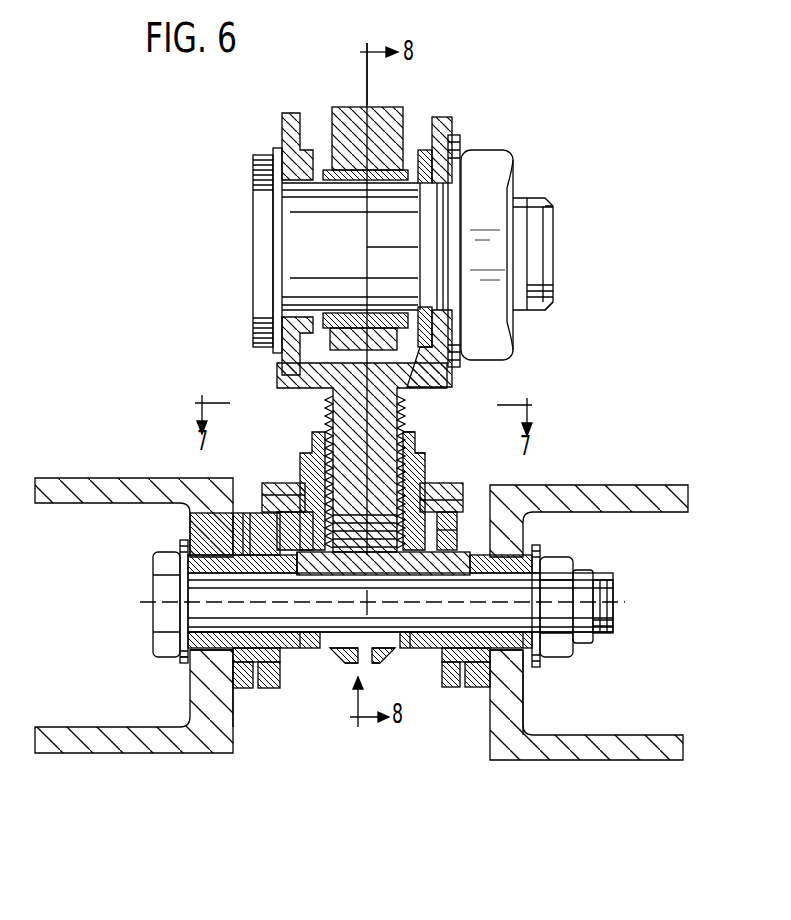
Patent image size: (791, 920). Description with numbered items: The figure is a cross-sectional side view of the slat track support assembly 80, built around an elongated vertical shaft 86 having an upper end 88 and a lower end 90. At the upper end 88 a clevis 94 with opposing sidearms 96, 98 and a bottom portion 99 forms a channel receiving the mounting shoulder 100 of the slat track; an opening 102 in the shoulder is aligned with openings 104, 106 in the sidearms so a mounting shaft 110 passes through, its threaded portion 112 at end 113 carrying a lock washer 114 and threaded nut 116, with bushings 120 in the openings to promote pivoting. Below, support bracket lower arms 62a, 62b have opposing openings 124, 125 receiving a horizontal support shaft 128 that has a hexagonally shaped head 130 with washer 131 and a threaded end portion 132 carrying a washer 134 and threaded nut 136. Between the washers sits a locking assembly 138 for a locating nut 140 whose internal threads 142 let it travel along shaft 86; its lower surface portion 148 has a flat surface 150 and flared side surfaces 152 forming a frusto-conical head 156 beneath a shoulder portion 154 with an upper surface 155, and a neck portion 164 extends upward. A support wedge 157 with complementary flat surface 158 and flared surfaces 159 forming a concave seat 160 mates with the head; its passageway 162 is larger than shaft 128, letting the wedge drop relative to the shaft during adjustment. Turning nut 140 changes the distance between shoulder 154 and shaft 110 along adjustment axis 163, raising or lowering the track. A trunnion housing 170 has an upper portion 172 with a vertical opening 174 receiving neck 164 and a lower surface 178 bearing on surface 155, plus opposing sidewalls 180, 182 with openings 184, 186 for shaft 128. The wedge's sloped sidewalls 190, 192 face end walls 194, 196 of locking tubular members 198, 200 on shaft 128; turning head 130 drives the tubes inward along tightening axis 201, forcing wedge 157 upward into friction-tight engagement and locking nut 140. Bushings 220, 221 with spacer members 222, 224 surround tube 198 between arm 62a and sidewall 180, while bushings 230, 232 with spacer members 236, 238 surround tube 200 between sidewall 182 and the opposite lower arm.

The slat track support assembly 80 is at (443, 86).
The elongated shaft 86 is at (440, 392).
The upper end 88 is at (326, 400).
The lower end 90 is at (350, 503).
The clevis 94 is at (370, 366).
The sidearm 96 is at (282, 130).
The sidearm 98 is at (440, 117).
The bottom portion 99 is at (455, 372).
The mounting shoulder 100 is at (345, 338).
The opening 102 is at (337, 196).
The opening 104 is at (292, 188).
The opening 106 is at (470, 212).
The mounting shaft 110 is at (290, 210).
The threaded portion 112 is at (530, 202).
The end 113 is at (553, 225).
The lock washer 114 is at (458, 140).
The threaded nut 116 is at (505, 248).
The bushings 120 is at (345, 165).
The opening 124 is at (176, 640).
The opening 125 is at (526, 668).
The support shaft 128 is at (200, 612).
The hexagonally shaped head 130 is at (157, 596).
The washer 131 is at (180, 590).
The threaded end portion 132 is at (613, 606).
The washer 134 is at (580, 600).
The threaded nut 136 is at (615, 583).
The locking assembly 138 is at (336, 660).
The locating nut 140 is at (416, 455).
The internal threads 142 is at (420, 475).
The lower surface portion 148 is at (402, 650).
The flat surface 150 is at (320, 650).
The flared circumferential side surfaces 152 is at (300, 650).
The shoulder portion 154 is at (205, 520).
The upper surface 155 is at (440, 512).
The frusto-conical head 156 is at (445, 505).
The support wedge 157 is at (480, 565).
The complementary flat surface 158 is at (482, 548).
The complementary circumferential flared surfaces 159 is at (212, 545).
The concave seat 160 is at (296, 640).
The passageway 162 is at (412, 660).
The adjustment axis 163 is at (367, 250).
The neck portion 164 is at (440, 428).
The trunnion housing 170 is at (305, 500).
The upper portion 172 is at (425, 495).
The vertical opening 174 is at (318, 490).
The lower surface 178 is at (288, 505).
The sidewall 180 is at (262, 490).
The sidewall 182 is at (456, 530).
The opening 184 is at (250, 580).
The opening 186 is at (545, 586).
The sidewall 190 is at (326, 650).
The sidewall 192 is at (396, 665).
The end wall 194 is at (332, 656).
The end wall 196 is at (382, 660).
The locking tubular member 198 is at (185, 662).
The locking tubular member 200 is at (537, 667).
The tightening axis 201 is at (140, 603).
The bushing 220 is at (195, 690).
The bushing 221 is at (272, 678).
The spacer member 222 is at (245, 668).
The spacer member 224 is at (260, 672).
The bushing 230 is at (510, 690).
The bushing 232 is at (449, 668).
The spacer member 236 is at (470, 662).
The spacer member 238 is at (458, 668).
The support bracket lower arm 62a is at (100, 753).
The support bracket lower arm 62b is at (640, 760).